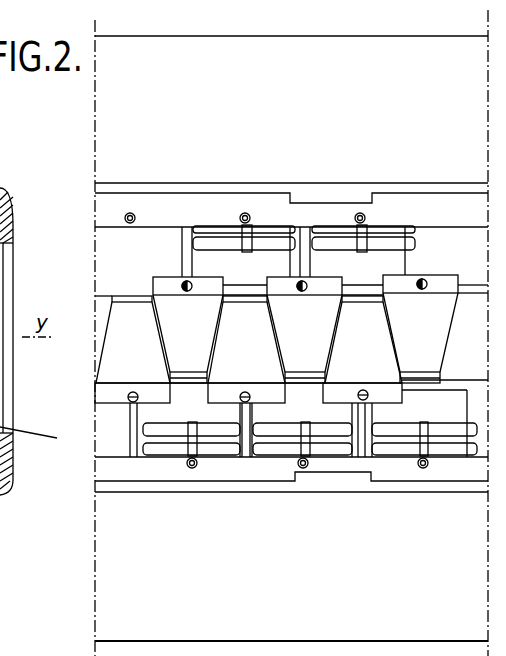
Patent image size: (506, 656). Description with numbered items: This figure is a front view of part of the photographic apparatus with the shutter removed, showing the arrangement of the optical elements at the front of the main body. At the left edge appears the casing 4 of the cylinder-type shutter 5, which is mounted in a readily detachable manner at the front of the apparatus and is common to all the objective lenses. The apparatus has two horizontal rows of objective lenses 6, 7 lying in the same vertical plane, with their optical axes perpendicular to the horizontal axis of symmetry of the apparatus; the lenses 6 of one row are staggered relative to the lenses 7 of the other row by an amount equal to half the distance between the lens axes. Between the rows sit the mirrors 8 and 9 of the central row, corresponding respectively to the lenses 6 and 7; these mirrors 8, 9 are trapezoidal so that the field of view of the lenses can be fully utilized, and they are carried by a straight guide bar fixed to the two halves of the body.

The casing 4 is at (0, 247).
The shutter 5 is at (0, 390).
The objective lenses 6 is at (260, 257).
The objective lenses 7 is at (168, 412).
The mirrors 8 is at (122, 375).
The mirrors 9 is at (200, 305).